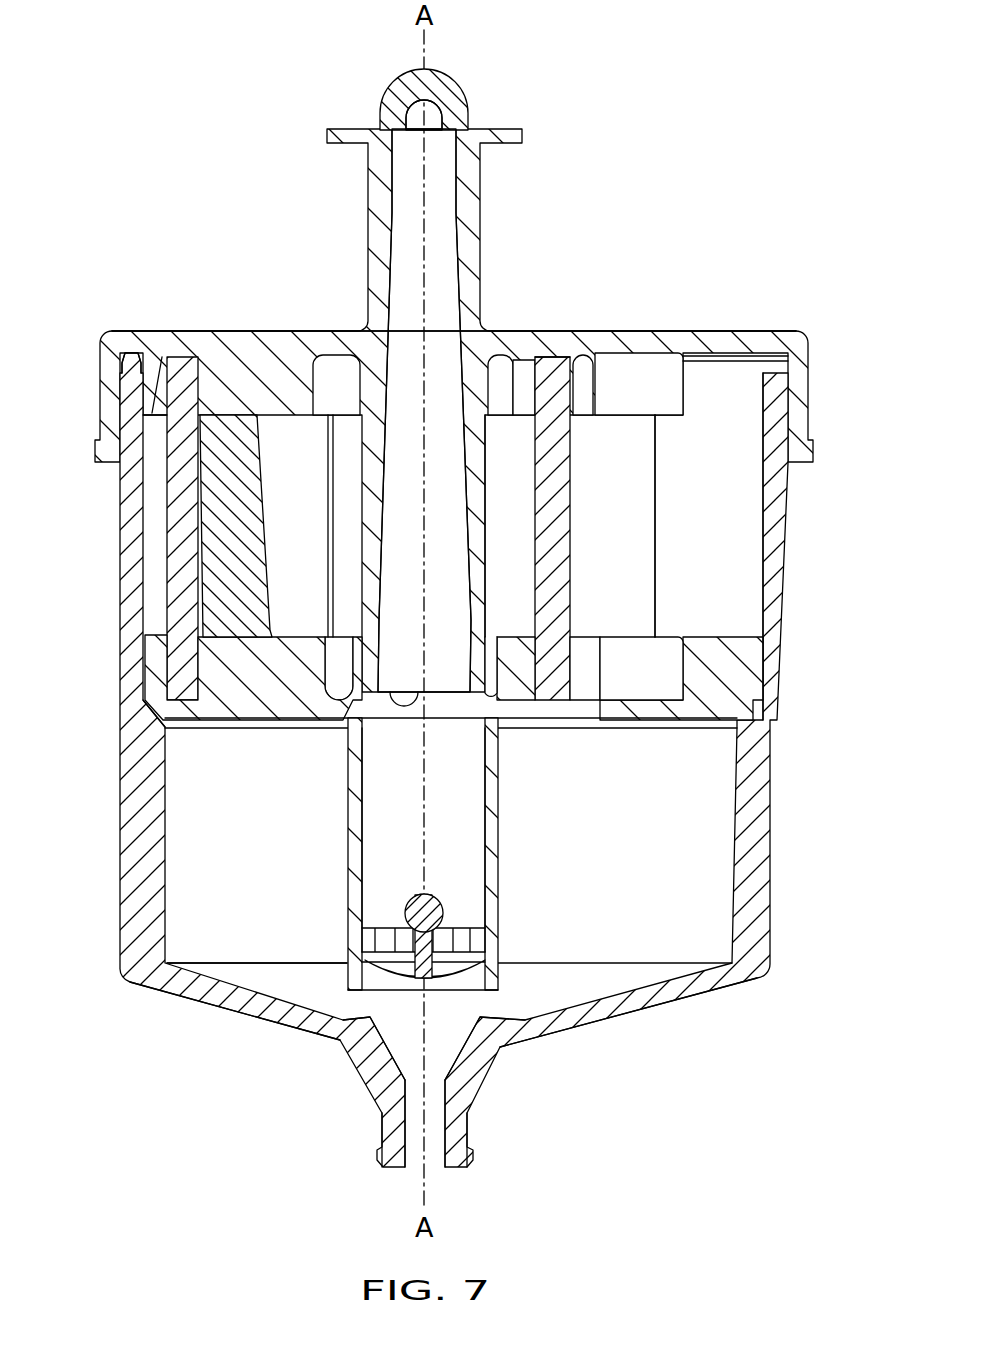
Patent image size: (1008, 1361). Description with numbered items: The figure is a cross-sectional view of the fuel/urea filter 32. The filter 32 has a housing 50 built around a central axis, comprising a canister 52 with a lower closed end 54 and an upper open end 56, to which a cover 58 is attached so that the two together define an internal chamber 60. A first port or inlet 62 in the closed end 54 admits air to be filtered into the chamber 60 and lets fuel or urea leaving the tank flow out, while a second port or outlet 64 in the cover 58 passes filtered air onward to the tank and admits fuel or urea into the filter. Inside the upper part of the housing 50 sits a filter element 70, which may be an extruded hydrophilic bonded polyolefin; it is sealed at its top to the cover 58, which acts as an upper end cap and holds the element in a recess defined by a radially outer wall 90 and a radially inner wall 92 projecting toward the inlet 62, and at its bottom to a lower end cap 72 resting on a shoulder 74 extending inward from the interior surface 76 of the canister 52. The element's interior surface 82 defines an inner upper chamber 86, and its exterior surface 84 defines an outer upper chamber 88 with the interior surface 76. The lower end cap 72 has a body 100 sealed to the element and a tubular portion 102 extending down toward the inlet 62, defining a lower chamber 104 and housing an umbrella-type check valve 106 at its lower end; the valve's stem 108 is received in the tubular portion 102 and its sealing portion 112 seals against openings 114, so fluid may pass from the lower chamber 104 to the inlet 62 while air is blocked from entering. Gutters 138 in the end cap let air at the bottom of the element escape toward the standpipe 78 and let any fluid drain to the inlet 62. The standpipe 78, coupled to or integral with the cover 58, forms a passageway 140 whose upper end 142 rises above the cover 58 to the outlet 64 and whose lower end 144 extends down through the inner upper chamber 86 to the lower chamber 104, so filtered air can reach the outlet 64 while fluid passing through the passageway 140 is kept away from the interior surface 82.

The filter 32 is at (706, 155).
The housing 50 is at (808, 566).
The canister 52 is at (800, 800).
The closed end 54 is at (597, 1018).
The open end 56 is at (800, 333).
The cover 58 is at (725, 343).
The internal chamber 60 is at (277, 816).
The inlet 62 is at (435, 1150).
The outlet 64 is at (396, 112).
The filter element 70 is at (555, 410).
The lower end cap 72 is at (150, 705).
The shoulder 74 is at (747, 728).
The interior surface 76 is at (737, 680).
The standpipe 78 is at (480, 453).
The interior surface 82 is at (525, 528).
The exterior surface 84 is at (655, 502).
The inner upper chamber 86 is at (312, 521).
The outer upper chamber 88 is at (726, 551).
The radially outer wall 90 is at (632, 377).
The radially inner wall 92 is at (520, 400).
The body 100 is at (580, 715).
The tubular portion 102 is at (355, 898).
The lower chamber 104 is at (411, 842).
The check valve 106 is at (392, 980).
The stem 108 is at (412, 913).
The sealing portion 112 is at (478, 1003).
The openings 114 is at (482, 933).
The gutters 138 is at (407, 700).
The passageway 140 is at (420, 551).
The upper end 142 is at (470, 132).
The lower end 144 is at (353, 700).